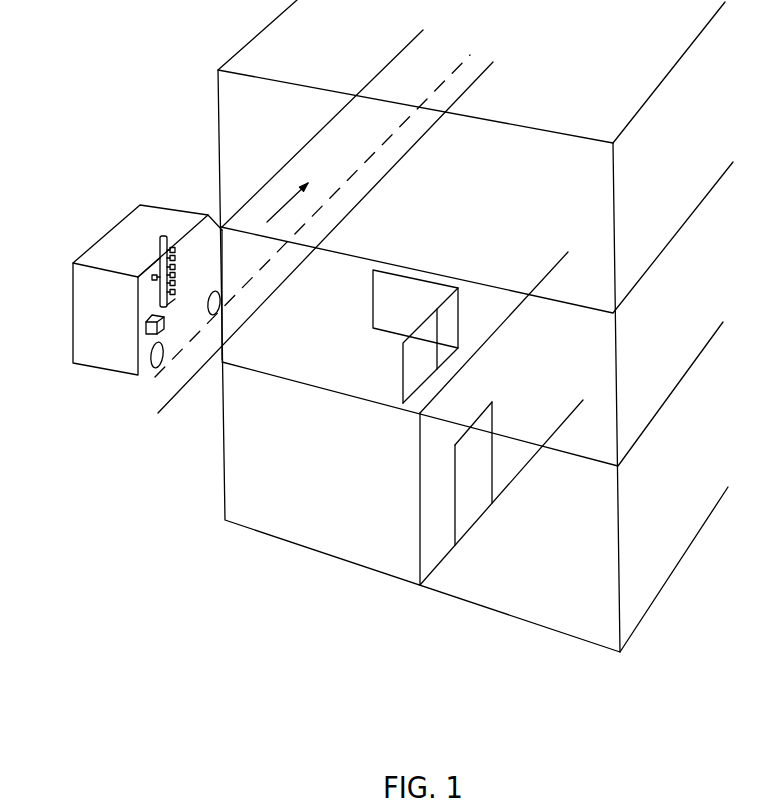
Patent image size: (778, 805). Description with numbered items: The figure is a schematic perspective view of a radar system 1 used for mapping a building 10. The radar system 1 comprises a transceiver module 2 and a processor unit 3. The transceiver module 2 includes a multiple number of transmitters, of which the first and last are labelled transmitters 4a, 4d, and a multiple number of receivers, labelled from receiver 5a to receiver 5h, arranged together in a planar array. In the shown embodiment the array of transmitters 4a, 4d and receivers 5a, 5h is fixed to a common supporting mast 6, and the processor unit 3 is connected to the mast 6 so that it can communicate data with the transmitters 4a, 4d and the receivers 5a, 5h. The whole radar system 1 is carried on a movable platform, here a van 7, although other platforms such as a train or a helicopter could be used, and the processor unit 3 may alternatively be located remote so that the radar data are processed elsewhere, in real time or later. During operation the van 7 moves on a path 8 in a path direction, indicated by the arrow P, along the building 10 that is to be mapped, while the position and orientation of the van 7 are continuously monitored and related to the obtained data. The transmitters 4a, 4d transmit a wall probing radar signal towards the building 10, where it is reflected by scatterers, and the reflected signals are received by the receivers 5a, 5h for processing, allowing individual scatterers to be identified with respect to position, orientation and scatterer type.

The radar system 1 is at (173, 274).
The transceiver module 2 is at (205, 280).
The processor unit 3 is at (163, 345).
The transmitter 4a is at (155, 244).
The transmitter 4d is at (157, 293).
The receiver 5a is at (170, 243).
The receiver 5h is at (170, 298).
The supporting mast 6 is at (163, 236).
The van 7 is at (97, 368).
The path 8 is at (346, 159).
The building 10 is at (638, 672).